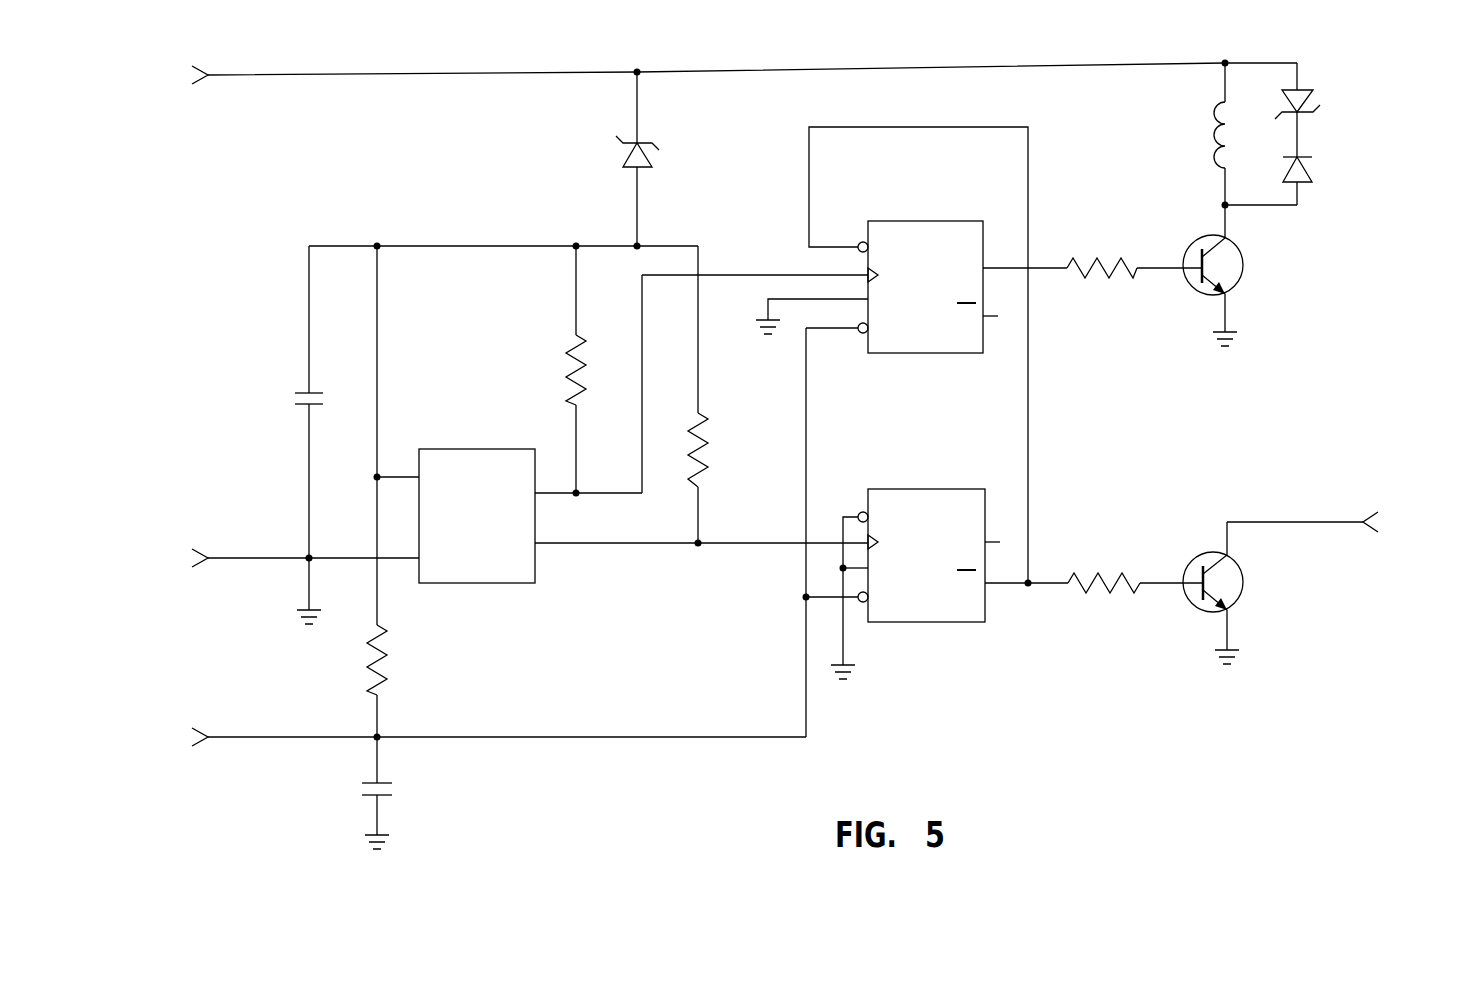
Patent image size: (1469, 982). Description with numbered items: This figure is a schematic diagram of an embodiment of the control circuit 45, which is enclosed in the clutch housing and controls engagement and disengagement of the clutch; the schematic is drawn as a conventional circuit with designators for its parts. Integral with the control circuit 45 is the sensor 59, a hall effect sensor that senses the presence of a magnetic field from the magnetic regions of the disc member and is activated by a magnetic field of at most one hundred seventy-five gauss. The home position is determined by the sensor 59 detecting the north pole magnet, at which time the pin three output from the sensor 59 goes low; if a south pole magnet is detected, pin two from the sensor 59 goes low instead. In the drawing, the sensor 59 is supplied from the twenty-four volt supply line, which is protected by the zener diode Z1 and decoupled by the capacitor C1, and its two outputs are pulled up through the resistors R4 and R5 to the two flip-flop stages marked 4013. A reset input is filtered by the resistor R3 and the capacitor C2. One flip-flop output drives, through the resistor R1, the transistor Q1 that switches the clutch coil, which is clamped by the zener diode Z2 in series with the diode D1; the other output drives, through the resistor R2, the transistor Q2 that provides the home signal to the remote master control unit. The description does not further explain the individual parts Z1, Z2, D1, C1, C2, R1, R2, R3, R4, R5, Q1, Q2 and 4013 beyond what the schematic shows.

The control circuit 45 is at (785, 446).
The sensor 59 is at (438, 449).
The dual D flip-flop (UB1, U1A) 4013 is at (926, 441).
The zener diode MLL5242B Z1 is at (592, 159).
The zener diode TMPZ5242LT Z2 is at (1367, 84).
The diode TMPD4148LT D1 is at (1371, 183).
The capacitor .1uF C1 is at (276, 409).
The capacitor .1uF C2 is at (347, 798).
The resistor 4.7K R1 is at (1102, 270).
The resistor 10K R2 is at (1104, 586).
The resistor 10K R3 is at (411, 660).
The resistor 10K R4 is at (542, 370).
The resistor 10K R5 is at (728, 450).
The transistor TMPT2222ALT1S Q1 is at (1299, 275).
The transistor TMPT2222ALT1S Q2 is at (1300, 593).